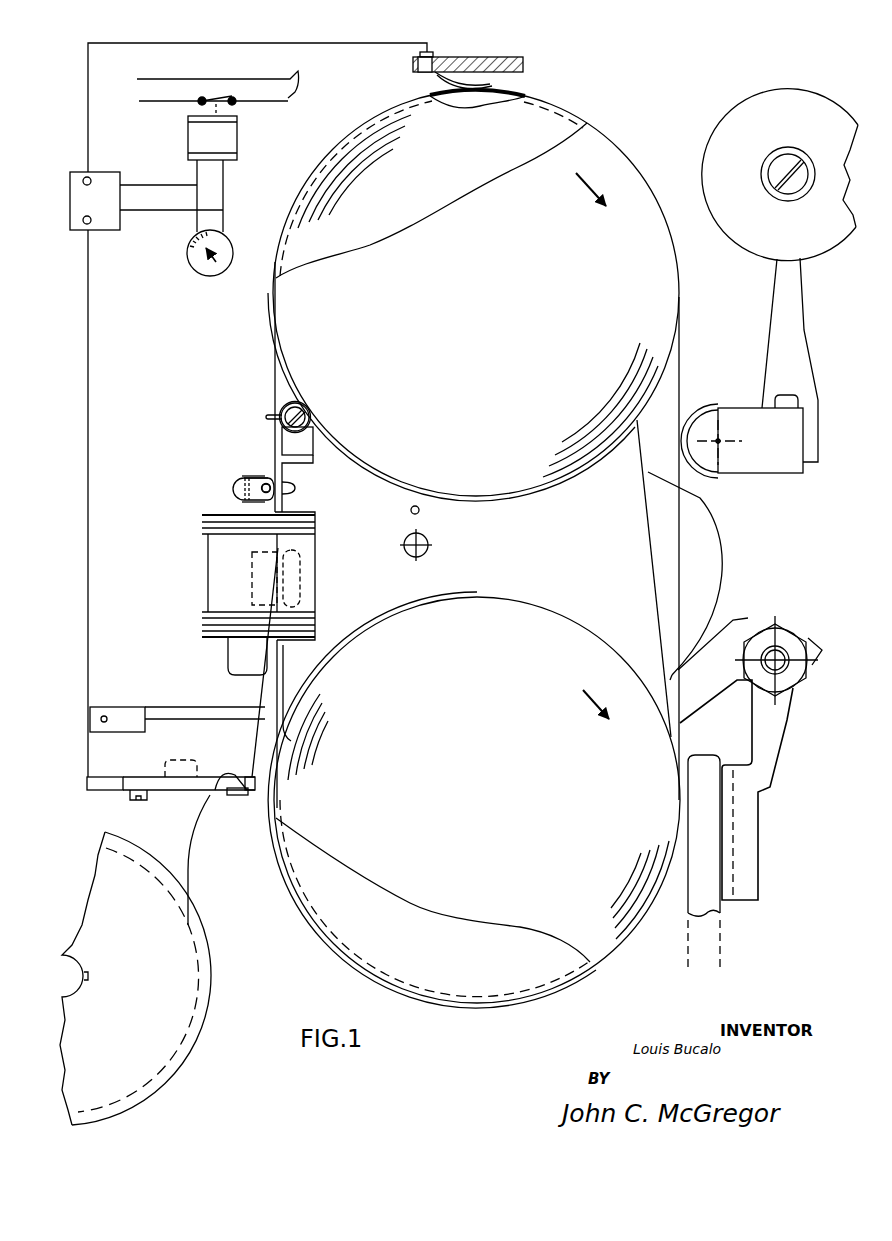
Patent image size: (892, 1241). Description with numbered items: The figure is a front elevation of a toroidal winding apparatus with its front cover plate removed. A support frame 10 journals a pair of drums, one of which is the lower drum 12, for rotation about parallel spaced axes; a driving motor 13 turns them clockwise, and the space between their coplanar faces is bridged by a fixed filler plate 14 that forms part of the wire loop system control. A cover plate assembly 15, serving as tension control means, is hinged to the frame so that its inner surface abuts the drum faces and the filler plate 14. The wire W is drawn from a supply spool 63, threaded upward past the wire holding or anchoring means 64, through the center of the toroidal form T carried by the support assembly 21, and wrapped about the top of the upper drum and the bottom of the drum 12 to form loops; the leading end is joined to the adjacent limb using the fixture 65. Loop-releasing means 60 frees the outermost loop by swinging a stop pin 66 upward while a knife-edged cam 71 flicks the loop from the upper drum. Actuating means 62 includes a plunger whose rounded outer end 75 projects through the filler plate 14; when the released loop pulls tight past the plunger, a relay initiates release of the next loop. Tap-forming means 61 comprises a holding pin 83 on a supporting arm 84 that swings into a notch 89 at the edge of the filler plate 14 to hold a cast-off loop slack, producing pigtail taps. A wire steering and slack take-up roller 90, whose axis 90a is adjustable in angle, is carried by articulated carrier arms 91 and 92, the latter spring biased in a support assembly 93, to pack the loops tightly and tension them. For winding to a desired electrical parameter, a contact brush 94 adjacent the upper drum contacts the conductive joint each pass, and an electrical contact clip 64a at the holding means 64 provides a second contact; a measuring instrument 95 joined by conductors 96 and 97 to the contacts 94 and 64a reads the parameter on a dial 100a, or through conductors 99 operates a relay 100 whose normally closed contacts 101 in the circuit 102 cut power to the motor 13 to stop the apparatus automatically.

The support frame 10 is at (716, 913).
The drum 12 is at (614, 927).
The driving motor 13 is at (712, 585).
The filler plate 14 is at (640, 560).
The cover plate assembly 15 is at (558, 122).
The support assembly 21 is at (204, 520).
The loop-releasing means 60 is at (312, 408).
The tap-forming means 61 is at (230, 483).
The actuating means 62 is at (432, 554).
The supply spool 63 is at (175, 950).
The wire holding or anchoring means 64 is at (219, 784).
The electrical contact clip 64a is at (244, 798).
The fixture 65 is at (208, 712).
The stop pin 66 is at (285, 414).
The knife-edged cam 71 is at (300, 447).
The outer end of the plunger 75 is at (430, 543).
The holding pin 83 is at (262, 483).
The supporting arm 84 is at (233, 491).
The notch 89 is at (293, 490).
The wire steering and slack take-up roller 90 is at (737, 405).
The axis of the roller 90a is at (717, 438).
The carrier arm 91 is at (790, 468).
The carrier arm 92 is at (806, 333).
The support assembly 93 is at (815, 240).
The contact brush 94 is at (468, 86).
The measuring instrument 95 is at (98, 179).
The conductor 96 is at (261, 42).
The conductor 97 is at (90, 416).
The conductors 99 is at (133, 203).
The relay 100 is at (237, 141).
The dial 100a is at (194, 256).
The normally closed contacts 101 is at (217, 97).
The circuit 102 is at (220, 77).
The wire W is at (683, 523).
The toroidal form T is at (252, 578).